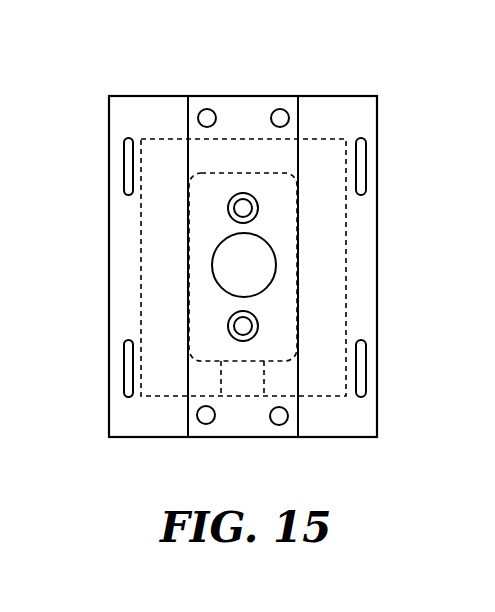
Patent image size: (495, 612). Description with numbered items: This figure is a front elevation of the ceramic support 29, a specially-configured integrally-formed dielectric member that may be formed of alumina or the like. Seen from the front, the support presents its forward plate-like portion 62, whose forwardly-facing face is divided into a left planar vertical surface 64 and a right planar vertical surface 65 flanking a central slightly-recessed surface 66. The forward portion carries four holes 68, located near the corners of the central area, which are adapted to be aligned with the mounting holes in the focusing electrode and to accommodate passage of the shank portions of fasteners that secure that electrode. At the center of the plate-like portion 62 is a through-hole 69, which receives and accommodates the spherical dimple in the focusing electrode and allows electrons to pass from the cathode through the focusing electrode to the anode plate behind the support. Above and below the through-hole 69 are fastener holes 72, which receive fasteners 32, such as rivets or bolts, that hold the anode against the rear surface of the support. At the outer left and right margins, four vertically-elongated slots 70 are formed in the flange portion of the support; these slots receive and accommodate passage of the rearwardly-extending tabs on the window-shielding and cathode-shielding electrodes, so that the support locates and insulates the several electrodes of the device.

The ceramic support 29 is at (100, 78).
The forward plate-like portion 62 is at (240, 108).
The left planar vertical surface 64 is at (126, 437).
The right planar vertical surface 65 is at (350, 437).
The central slightly-recessed surface 66 is at (242, 417).
The holes 68 is at (206, 108).
The vertically-elongated slots 70 is at (127, 164).
The fasteners 32 is at (234, 208).
The fastener holes 72 is at (258, 208).
The through-hole 69 is at (263, 258).